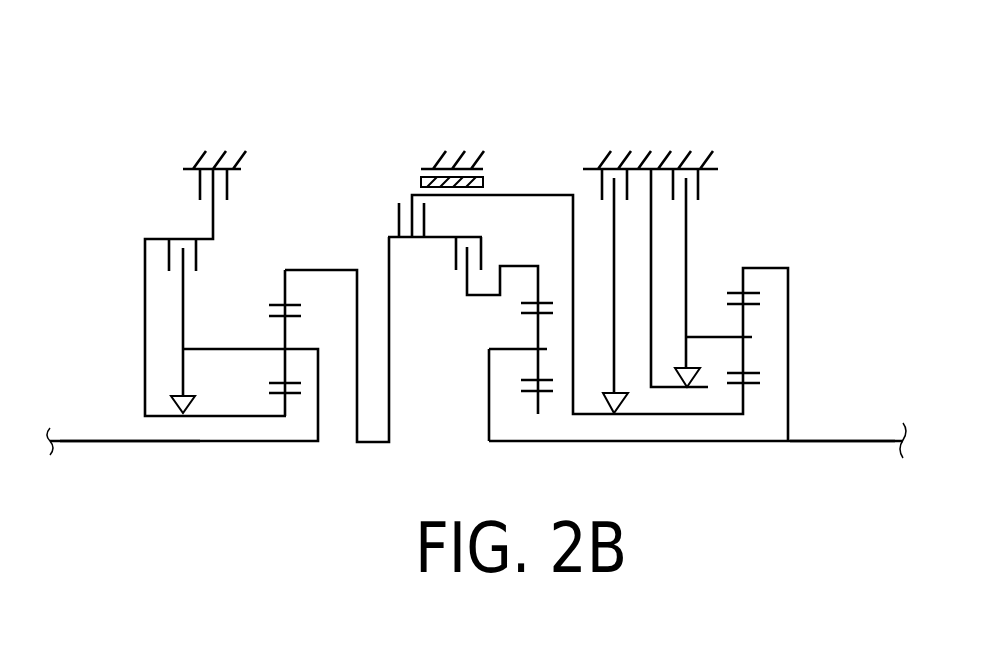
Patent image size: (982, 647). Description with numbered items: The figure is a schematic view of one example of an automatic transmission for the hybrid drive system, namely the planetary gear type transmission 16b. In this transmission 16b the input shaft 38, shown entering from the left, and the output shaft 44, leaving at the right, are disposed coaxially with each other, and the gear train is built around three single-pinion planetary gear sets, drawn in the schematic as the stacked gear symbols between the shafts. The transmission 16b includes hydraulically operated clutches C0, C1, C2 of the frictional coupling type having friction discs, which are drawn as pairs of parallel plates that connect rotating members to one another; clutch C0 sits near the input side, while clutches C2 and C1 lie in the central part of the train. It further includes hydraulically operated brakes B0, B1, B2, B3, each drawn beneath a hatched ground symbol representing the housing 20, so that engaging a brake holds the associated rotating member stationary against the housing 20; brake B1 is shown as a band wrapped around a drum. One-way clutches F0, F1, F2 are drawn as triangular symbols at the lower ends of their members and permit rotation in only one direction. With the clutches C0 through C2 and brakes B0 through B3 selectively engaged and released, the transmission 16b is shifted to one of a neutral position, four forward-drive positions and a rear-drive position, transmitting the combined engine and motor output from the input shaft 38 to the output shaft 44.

The planetary gear type transmission 16b is at (749, 109).
The housing 20 is at (224, 168).
The input shaft 38 is at (155, 442).
The output shaft 44 is at (829, 442).
The brake B0 is at (200, 192).
The brake B1 is at (423, 181).
The brake B2 is at (598, 178).
The brake B3 is at (699, 192).
The clutch C0 is at (195, 260).
The clutch C1 is at (456, 267).
The clutch C2 is at (399, 217).
The one-way clutch F0 is at (173, 403).
The one-way clutch F1 is at (614, 414).
The one-way clutch F2 is at (686, 388).